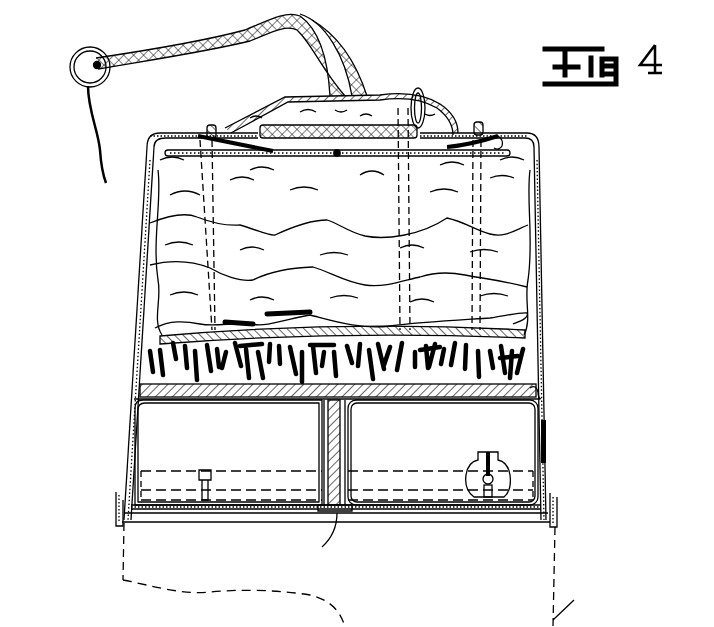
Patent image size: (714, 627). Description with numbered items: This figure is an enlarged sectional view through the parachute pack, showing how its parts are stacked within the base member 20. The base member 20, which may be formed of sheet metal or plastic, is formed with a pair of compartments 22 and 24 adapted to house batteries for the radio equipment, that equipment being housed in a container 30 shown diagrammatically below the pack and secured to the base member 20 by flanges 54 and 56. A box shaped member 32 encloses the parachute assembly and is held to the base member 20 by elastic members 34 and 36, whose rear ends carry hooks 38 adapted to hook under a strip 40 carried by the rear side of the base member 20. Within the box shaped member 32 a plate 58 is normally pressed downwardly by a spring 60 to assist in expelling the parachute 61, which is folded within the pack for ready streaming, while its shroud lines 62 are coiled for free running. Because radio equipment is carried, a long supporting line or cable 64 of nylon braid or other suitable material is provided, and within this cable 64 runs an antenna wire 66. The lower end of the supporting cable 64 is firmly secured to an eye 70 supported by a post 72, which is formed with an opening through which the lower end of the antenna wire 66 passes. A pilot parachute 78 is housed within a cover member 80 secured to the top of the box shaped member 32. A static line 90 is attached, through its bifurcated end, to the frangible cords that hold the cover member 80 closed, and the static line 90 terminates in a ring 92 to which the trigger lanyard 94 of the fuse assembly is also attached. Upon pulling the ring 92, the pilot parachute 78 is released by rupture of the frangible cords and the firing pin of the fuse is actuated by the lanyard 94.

The base member 20 is at (548, 445).
The compartment 22 is at (140, 423).
The compartment 24 is at (530, 425).
The container 30 is at (565, 613).
The box shaped member 32 is at (540, 290).
The elastic member 34 is at (210, 125).
The elastic member 36 is at (482, 125).
The hook 38 is at (206, 500).
The strip 40 is at (490, 499).
The flange 54 is at (560, 512).
The flange 56 is at (114, 502).
The plate 58 is at (520, 153).
The spring 60 is at (503, 143).
The parachute 61 is at (528, 215).
The shroud lines 62 is at (530, 360).
The supporting line or cable 64 is at (545, 382).
The antenna wire 66 is at (345, 469).
The eye 70 is at (308, 405).
The post 72 is at (348, 446).
The pilot parachute 78 is at (401, 100).
The cover member 80 is at (448, 105).
The static line 90 is at (152, 57).
The ring 92 is at (70, 62).
The trigger lanyard 94 is at (103, 129).